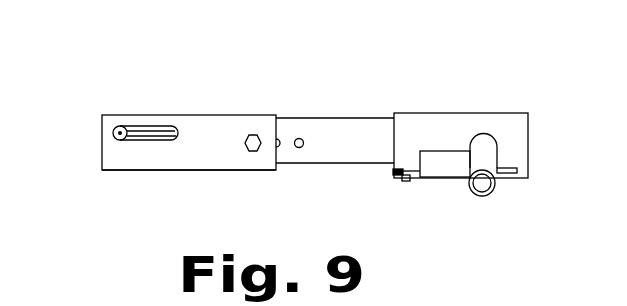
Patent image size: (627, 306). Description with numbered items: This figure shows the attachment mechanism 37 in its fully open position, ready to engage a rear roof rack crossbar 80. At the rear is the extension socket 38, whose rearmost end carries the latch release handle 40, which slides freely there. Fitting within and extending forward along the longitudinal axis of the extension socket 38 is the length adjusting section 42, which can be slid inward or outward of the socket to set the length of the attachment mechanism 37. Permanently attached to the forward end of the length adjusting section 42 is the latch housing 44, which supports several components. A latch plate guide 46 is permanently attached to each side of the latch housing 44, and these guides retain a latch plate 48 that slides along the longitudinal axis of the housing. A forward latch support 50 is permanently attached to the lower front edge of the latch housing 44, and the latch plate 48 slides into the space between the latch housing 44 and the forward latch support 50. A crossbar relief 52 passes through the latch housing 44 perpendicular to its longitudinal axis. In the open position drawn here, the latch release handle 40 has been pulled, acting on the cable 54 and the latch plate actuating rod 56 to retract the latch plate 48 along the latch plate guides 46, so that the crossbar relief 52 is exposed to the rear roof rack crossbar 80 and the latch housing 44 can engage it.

The attachment mechanism 37 is at (224, 110).
The extension socket 38 is at (143, 157).
The latch release handle 40 is at (118, 132).
The length adjusting section 42 is at (311, 118).
The latch housing 44 is at (412, 128).
The latch plate guide 46 is at (443, 158).
The latch plate 48 is at (393, 171).
The forward latch support 50 is at (517, 172).
The crossbar relief 52 is at (483, 133).
The cable 54 is at (157, 135).
The latch plate actuating rod 56 is at (407, 181).
The rear roof rack crossbar 80 is at (490, 193).